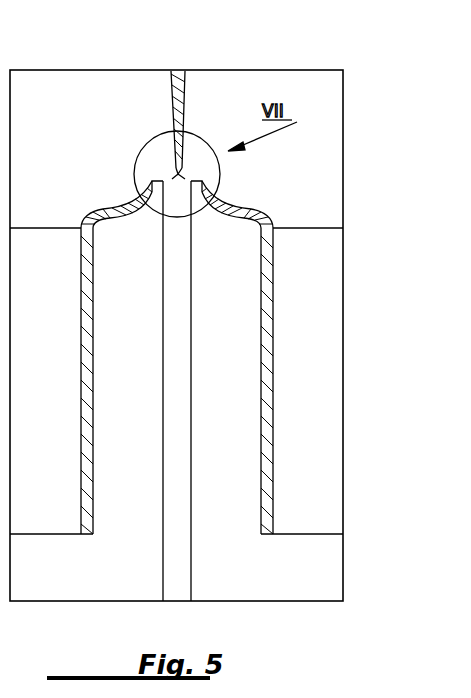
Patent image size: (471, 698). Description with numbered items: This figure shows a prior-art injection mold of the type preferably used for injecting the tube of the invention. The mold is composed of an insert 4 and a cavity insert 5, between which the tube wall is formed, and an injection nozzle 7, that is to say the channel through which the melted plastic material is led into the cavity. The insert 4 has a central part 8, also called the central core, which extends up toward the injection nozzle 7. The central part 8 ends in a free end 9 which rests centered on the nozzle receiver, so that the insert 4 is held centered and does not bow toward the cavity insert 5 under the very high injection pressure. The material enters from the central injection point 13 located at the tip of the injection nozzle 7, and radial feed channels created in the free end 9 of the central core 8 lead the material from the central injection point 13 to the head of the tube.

The insert 4 is at (232, 458).
The cavity insert 5 is at (318, 210).
The injection nozzle 7 is at (176, 105).
The central part 8 is at (178, 350).
The free end 9 is at (197, 172).
The central injection point 13 is at (177, 171).